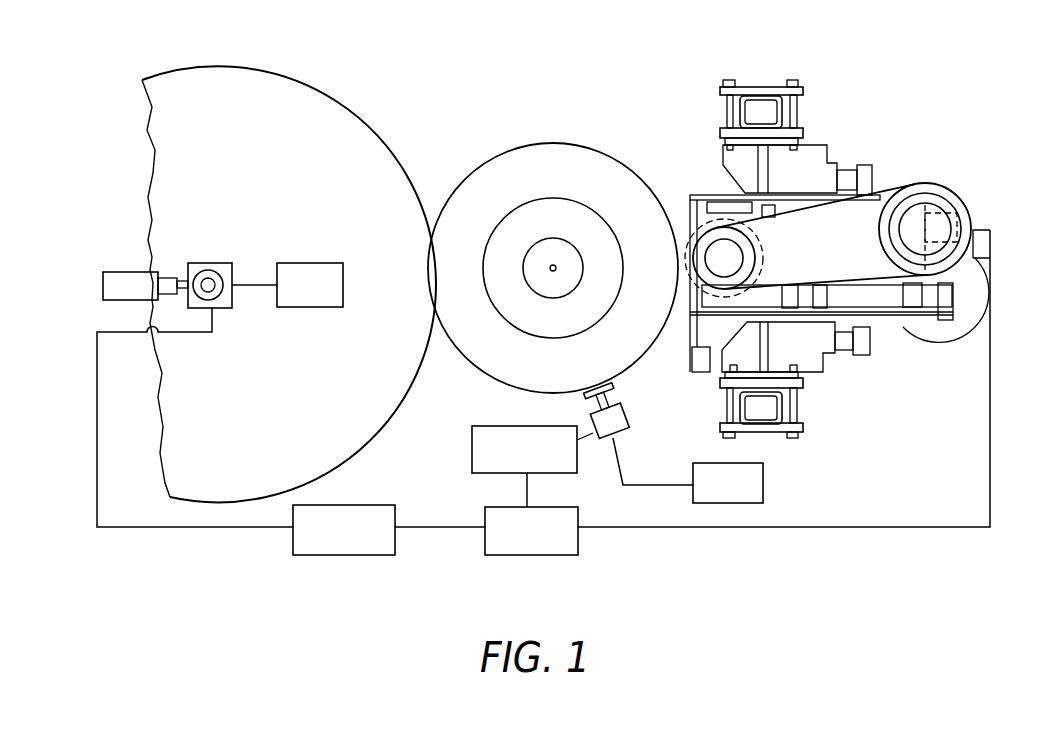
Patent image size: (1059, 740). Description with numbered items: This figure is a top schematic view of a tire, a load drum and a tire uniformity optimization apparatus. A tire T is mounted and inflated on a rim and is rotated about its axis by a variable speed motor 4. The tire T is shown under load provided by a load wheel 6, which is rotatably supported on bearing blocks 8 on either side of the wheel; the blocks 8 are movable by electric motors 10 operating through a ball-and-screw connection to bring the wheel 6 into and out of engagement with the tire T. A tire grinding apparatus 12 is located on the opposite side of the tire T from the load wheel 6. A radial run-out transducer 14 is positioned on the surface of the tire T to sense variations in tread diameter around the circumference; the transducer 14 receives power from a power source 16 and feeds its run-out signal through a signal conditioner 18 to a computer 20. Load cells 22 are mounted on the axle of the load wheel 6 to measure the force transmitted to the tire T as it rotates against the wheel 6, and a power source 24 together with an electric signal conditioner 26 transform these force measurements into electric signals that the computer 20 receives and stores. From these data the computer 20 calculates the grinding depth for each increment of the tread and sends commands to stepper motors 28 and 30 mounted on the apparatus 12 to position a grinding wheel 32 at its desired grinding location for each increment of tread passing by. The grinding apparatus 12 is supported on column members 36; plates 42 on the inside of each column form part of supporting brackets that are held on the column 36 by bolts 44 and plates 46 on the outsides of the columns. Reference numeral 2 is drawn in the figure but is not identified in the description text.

The tire T is at (605, 152).
The tape pack 2 is at (608, 223).
The variable speed motor 4 is at (537, 243).
The load wheel 6 is at (318, 97).
The bearing blocks 8 is at (200, 266).
The electric motors 10 is at (120, 272).
The tire grinding apparatus 12 is at (938, 158).
The radial run-out transducer 14 is at (613, 438).
The power source 16 is at (765, 482).
The signal conditioner 18 is at (483, 425).
The computer 20 is at (557, 555).
The load cells 22 is at (207, 262).
The power source 24 is at (337, 262).
The electric signal conditioner 26 is at (358, 555).
The stepper motor 28 is at (957, 212).
The stepper motor 30 is at (967, 228).
The grinding wheel 32 is at (684, 268).
The column members 36 is at (788, 108).
The plates 42 is at (803, 131).
The bolts 44 is at (725, 104).
The plates 46 is at (778, 83).